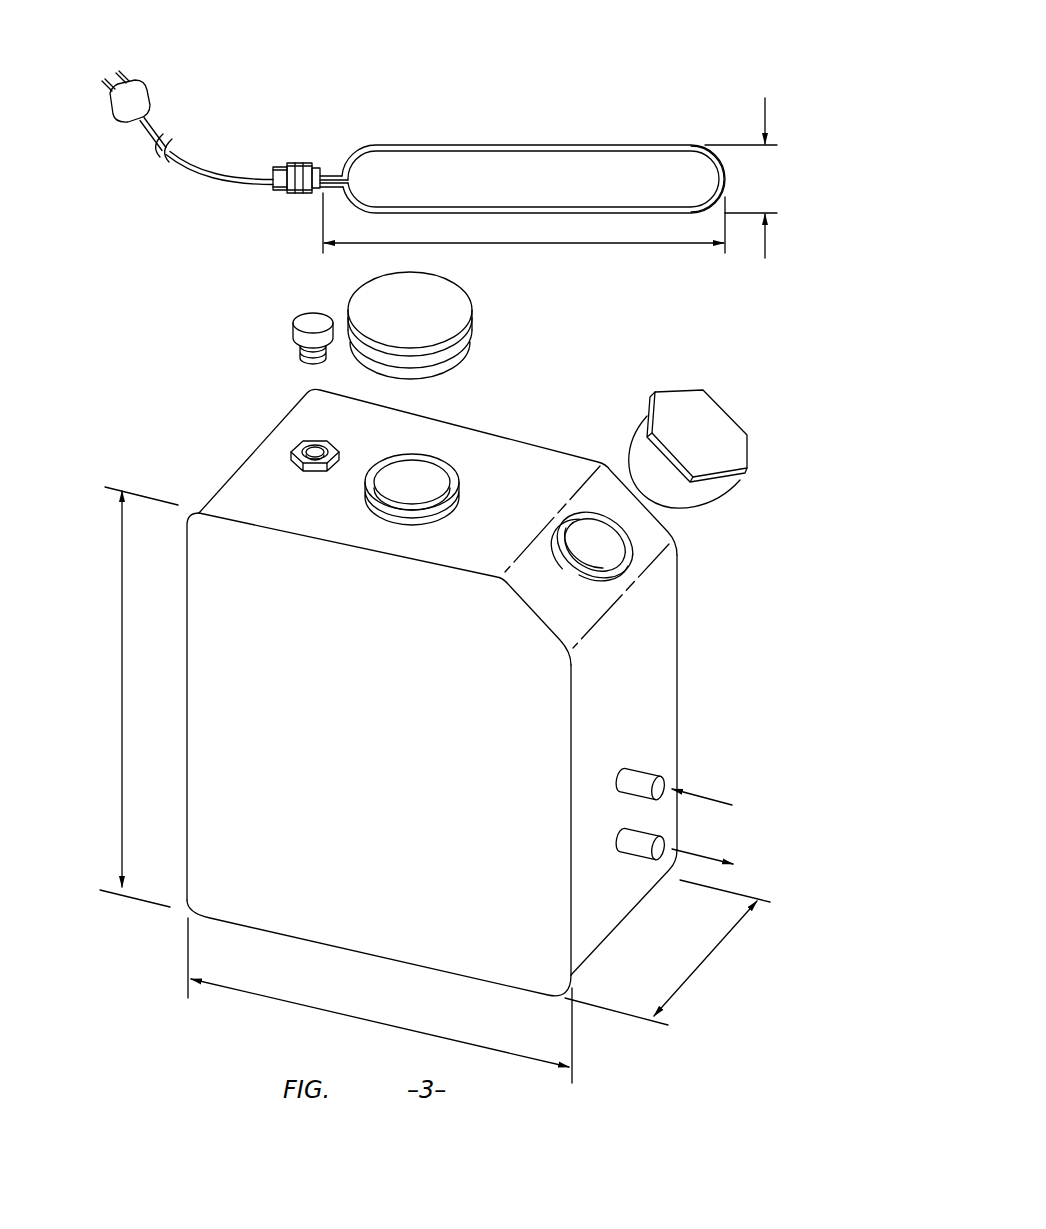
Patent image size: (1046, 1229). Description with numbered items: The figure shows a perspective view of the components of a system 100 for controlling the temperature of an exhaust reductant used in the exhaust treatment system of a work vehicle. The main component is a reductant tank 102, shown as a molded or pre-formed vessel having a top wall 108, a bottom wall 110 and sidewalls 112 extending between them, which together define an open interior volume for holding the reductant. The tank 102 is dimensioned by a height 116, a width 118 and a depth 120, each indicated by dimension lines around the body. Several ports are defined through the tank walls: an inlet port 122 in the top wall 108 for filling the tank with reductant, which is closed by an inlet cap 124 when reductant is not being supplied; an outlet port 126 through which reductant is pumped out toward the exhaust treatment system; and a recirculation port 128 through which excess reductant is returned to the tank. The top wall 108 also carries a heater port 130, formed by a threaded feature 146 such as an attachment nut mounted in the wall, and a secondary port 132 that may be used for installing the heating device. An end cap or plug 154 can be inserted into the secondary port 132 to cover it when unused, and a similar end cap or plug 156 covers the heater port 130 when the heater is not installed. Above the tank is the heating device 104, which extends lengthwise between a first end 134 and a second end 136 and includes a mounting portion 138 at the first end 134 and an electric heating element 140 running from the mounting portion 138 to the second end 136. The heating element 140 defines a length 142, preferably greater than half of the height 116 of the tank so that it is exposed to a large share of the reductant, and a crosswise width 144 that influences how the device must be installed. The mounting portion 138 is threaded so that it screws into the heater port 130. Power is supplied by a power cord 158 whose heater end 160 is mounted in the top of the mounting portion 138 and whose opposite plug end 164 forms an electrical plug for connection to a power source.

The system 100 is at (623, 41).
The reductant tank 102 is at (190, 478).
The heating device 104 is at (415, 128).
The top wall 108 is at (518, 460).
The bottom wall 110 is at (315, 940).
The sidewalls 112 is at (187, 667).
The height 116 is at (122, 733).
The width 118 is at (312, 1005).
The depth 120 is at (700, 960).
The inlet port 122 is at (610, 538).
The inlet cap 124 is at (708, 412).
The outlet port 126 is at (637, 852).
The recirculation port 128 is at (648, 772).
The heater port 130 is at (305, 445).
The secondary port 132 is at (414, 490).
The first end 134 is at (272, 177).
The second end 136 is at (735, 172).
The mounting portion 138 is at (300, 196).
The electric heating element 140 is at (490, 140).
The length 142 is at (602, 245).
The crosswise width 144 is at (763, 107).
The threaded feature 146 is at (318, 440).
The end cap or plug 154 is at (452, 312).
The end cap or plug 156 is at (312, 322).
The power cord 158 is at (181, 168).
The heater end 160 is at (273, 188).
The plug end 164 is at (133, 101).